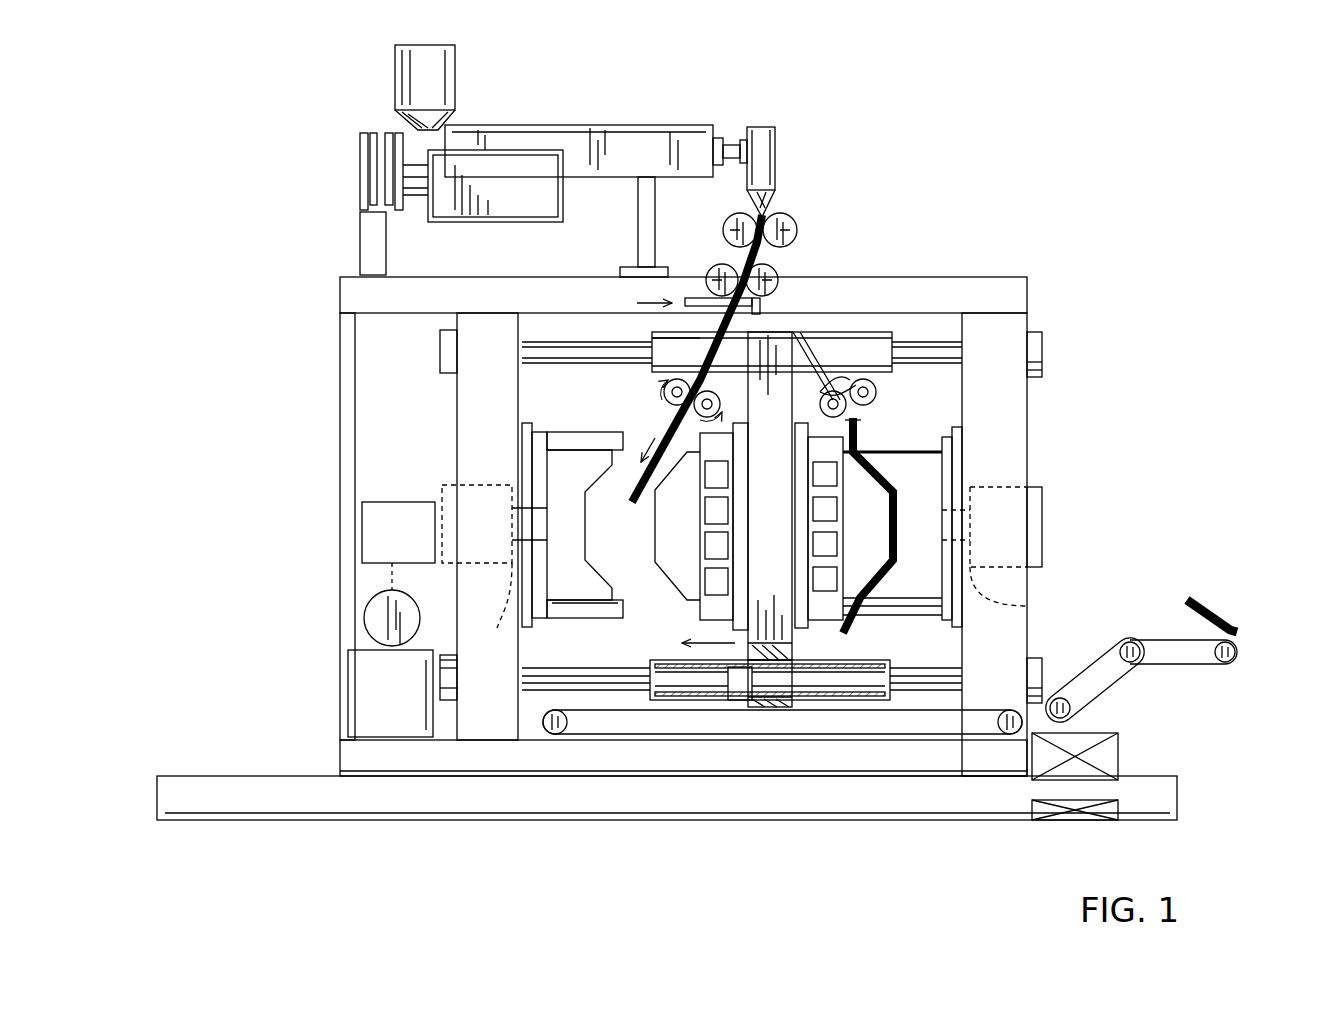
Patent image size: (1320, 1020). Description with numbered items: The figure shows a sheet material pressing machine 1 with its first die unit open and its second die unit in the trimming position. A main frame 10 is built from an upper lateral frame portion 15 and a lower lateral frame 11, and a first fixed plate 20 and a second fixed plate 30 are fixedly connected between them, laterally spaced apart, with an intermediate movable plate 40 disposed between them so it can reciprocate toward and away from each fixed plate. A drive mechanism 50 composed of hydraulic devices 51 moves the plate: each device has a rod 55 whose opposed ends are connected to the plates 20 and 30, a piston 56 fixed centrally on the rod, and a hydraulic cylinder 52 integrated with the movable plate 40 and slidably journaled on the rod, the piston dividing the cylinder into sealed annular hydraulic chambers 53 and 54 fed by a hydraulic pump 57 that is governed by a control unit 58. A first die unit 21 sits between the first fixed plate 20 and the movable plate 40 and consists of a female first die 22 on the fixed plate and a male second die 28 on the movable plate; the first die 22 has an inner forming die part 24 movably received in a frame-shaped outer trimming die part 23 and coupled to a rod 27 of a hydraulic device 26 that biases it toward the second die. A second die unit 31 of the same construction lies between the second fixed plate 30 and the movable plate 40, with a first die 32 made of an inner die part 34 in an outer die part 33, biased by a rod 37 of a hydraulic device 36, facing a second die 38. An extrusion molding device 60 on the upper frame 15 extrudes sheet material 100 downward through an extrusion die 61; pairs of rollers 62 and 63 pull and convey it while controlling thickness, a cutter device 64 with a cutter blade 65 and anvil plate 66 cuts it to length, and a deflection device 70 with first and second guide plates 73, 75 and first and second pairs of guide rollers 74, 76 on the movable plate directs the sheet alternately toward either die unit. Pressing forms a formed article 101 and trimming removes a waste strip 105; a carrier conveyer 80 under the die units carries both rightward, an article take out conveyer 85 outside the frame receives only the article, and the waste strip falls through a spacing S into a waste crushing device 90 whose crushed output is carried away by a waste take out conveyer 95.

The pressing machine 1 is at (975, 157).
The main frame 10 is at (683, 544).
The lower lateral frame 11 is at (240, 774).
The upper lateral frame portion 15 is at (440, 276).
The first fixed plate 20 is at (454, 405).
The first die unit 21 is at (562, 425).
The first die 22 is at (545, 645).
The outer die part 23 is at (562, 608).
The inner die part 24 is at (588, 575).
The hydraulic device 26 is at (445, 565).
The rod 27 is at (514, 580).
The second die 28 is at (682, 578).
The second fixed plate 30 is at (1031, 397).
The second die unit 31 is at (936, 428).
The first die 32 is at (952, 650).
The outer die part 33 is at (897, 612).
The inner die part 34 is at (932, 600).
The hydraulic device 36 is at (1036, 531).
The rod 37 is at (1027, 606).
The second die 38 is at (853, 600).
The movable plate 40 is at (746, 522).
The drive mechanism 50 is at (590, 700).
The hydraulic devices 51 is at (975, 222).
The hydraulic cylinder 52 is at (862, 347).
The hydraulic chamber 53 is at (693, 693).
The hydraulic chamber 54 is at (805, 693).
The rod 55 is at (952, 343).
The piston 56 is at (738, 683).
The hydraulic pump 57 is at (372, 617).
The control unit 58 is at (363, 503).
The extrusion molding device 60 is at (589, 120).
The extrusion die 61 is at (781, 191).
The rollers 62 is at (728, 222).
The rollers 63 is at (710, 270).
The cutter device 64 is at (682, 273).
The cutter blade 65 is at (702, 303).
The anvil plate 66 is at (761, 303).
The deflection device 70 is at (834, 352).
The first guide plate 73 is at (663, 387).
The first pair of guide rollers 74 is at (692, 402).
The second guide plate 75 is at (848, 400).
The second pair of guide rollers 76 is at (878, 394).
The carrier conveyer 80 is at (768, 742).
The article take out conveyer 85 is at (1114, 698).
The waste crushing device 90 is at (1131, 762).
The waste take out conveyer 95 is at (1131, 809).
The sheet material 100 is at (760, 249).
The formed article 101 is at (895, 480).
The waste strip 105 is at (862, 420).
The spacing S is at (1046, 688).